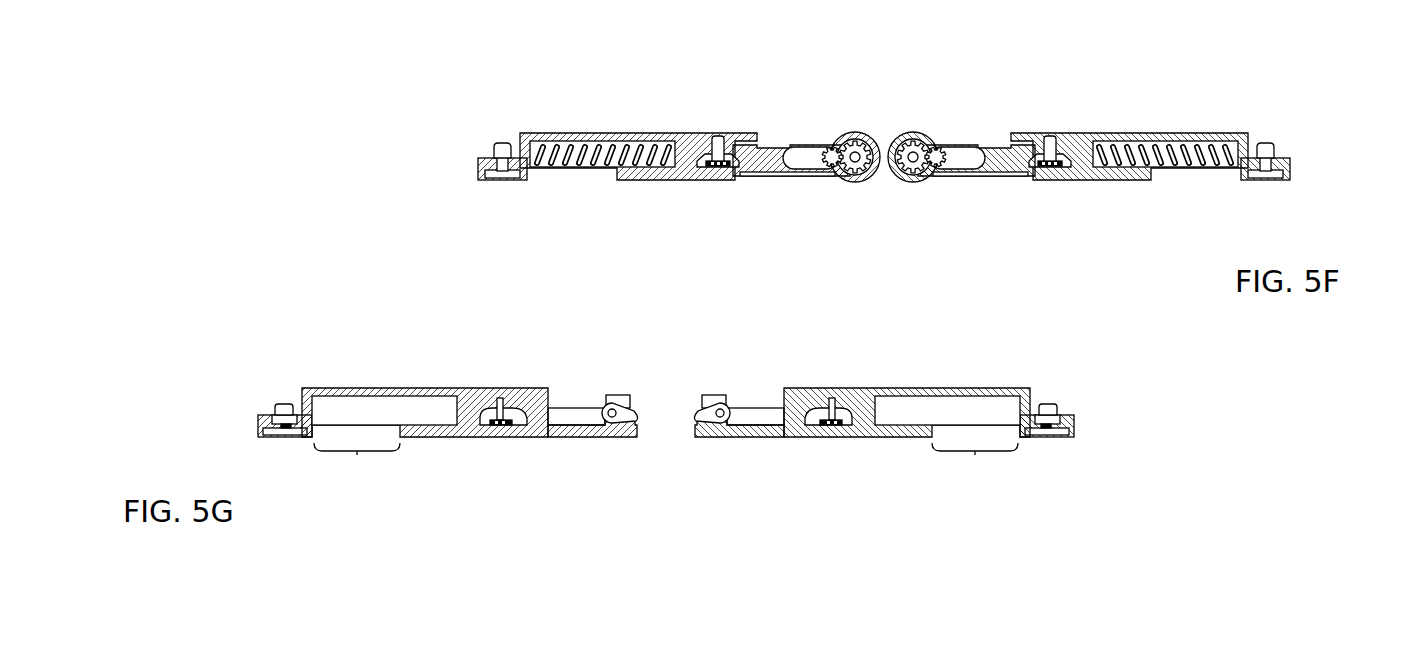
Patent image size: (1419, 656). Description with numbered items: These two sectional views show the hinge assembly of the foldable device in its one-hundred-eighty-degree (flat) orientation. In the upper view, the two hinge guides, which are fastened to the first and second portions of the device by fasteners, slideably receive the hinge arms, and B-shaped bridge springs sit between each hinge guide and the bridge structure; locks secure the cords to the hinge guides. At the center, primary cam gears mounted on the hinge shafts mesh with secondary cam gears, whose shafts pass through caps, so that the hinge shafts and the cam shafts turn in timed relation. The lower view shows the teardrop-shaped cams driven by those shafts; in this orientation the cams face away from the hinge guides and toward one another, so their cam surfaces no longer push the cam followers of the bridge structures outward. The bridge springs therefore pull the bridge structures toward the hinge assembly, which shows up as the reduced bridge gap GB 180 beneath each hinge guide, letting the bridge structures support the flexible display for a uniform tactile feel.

The bridge gap at 180-degree orientation 180 is at (667, 467).